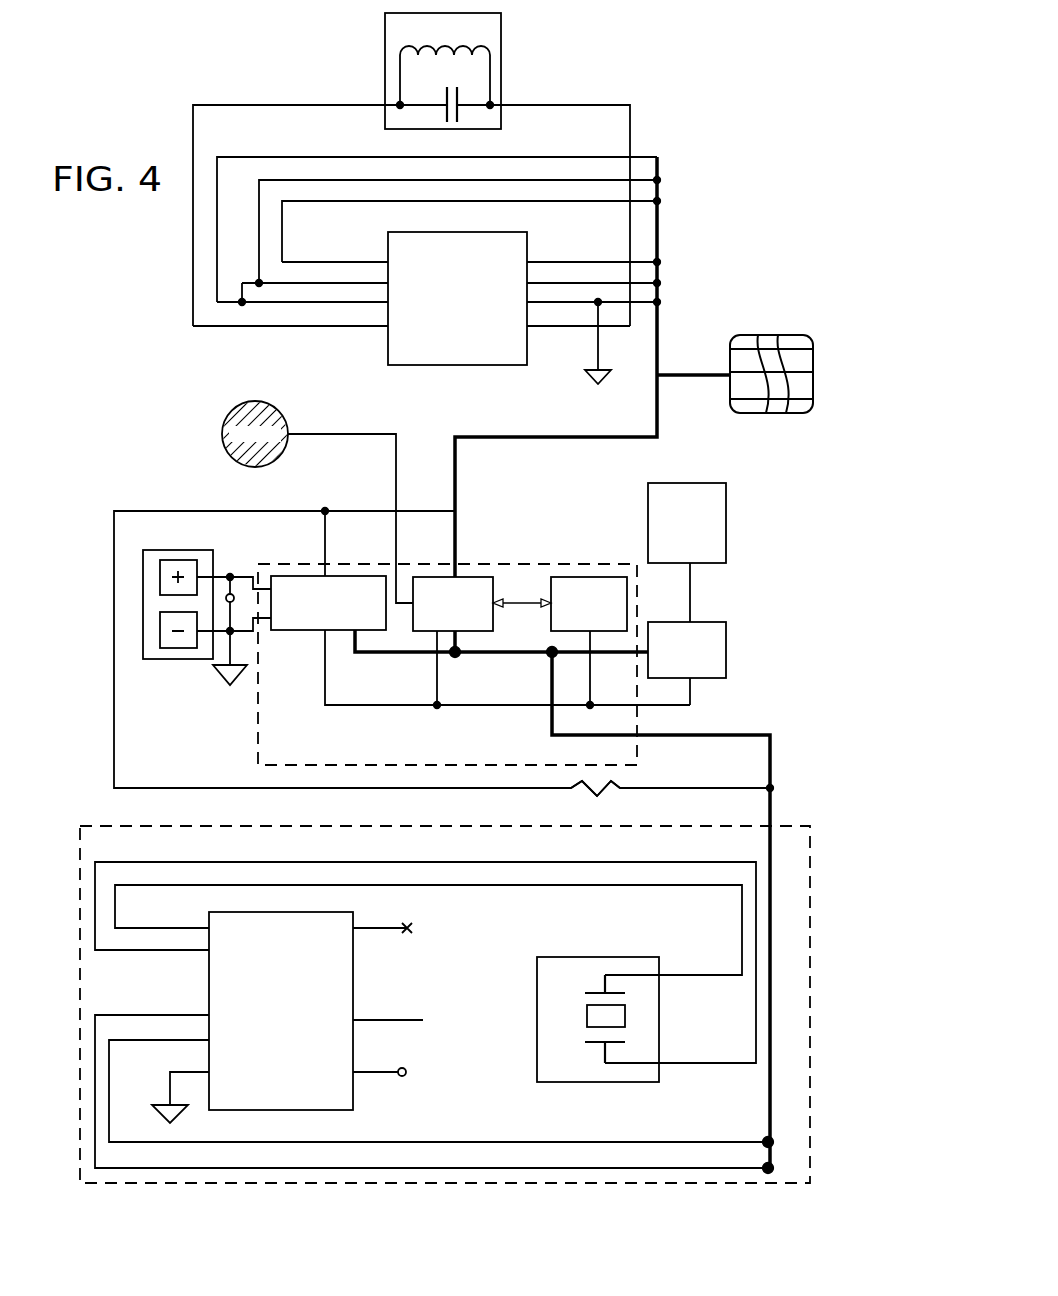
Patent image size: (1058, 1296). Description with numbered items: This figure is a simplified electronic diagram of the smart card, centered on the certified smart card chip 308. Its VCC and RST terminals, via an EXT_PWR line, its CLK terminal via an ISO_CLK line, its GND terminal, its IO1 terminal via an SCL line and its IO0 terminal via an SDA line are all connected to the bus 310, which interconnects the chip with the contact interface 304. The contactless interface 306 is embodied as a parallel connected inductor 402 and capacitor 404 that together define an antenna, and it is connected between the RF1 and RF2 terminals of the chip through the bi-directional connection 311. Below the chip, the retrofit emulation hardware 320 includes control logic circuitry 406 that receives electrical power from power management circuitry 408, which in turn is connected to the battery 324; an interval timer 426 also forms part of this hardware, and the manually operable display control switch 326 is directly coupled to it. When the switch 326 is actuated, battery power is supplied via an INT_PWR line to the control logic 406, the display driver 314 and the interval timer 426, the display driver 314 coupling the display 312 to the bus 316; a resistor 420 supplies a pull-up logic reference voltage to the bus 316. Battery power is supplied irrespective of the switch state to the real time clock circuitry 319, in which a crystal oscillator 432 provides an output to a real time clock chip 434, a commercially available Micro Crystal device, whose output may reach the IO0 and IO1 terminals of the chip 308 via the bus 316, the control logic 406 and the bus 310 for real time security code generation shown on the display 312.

The contact interface 304 is at (762, 335).
The contactless interface 306 is at (501, 52).
The certified smart card chip 308 is at (388, 343).
The bus 310 is at (657, 345).
The bi-directional connection 311 is at (257, 104).
The display 312 is at (690, 483).
The display driver 314 is at (706, 622).
The bus 316 is at (490, 656).
The real time clock circuitry 319 is at (80, 870).
The retrofit emulation hardware 320 is at (258, 738).
The battery 324 is at (155, 660).
The display control switch 326 is at (282, 410).
The inductor 402 is at (403, 50).
The capacitor 404 is at (446, 103).
The control logic circuitry 406 is at (495, 572).
The power management circuitry 408 is at (295, 572).
The resistor 420 is at (597, 792).
The interval timer 426 is at (592, 572).
The crystal oscillator 432 is at (617, 957).
The real time clock chip 434 is at (353, 1097).